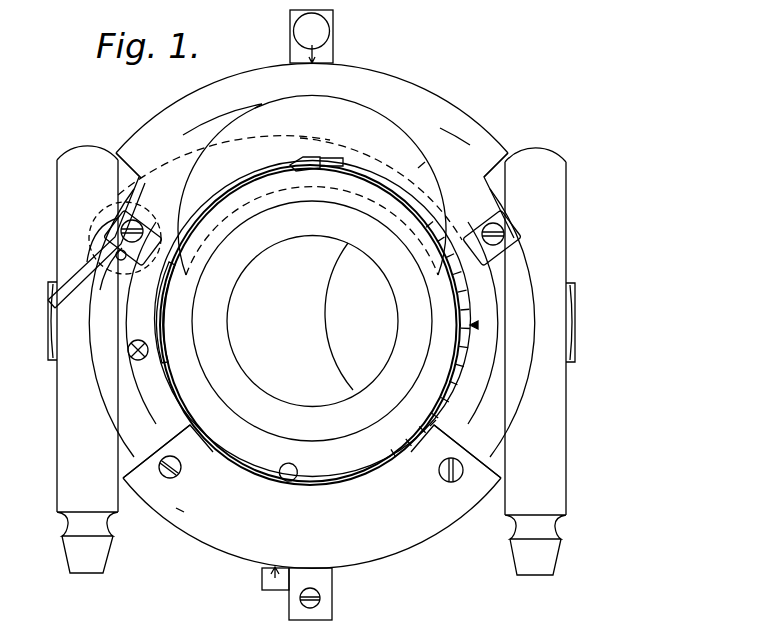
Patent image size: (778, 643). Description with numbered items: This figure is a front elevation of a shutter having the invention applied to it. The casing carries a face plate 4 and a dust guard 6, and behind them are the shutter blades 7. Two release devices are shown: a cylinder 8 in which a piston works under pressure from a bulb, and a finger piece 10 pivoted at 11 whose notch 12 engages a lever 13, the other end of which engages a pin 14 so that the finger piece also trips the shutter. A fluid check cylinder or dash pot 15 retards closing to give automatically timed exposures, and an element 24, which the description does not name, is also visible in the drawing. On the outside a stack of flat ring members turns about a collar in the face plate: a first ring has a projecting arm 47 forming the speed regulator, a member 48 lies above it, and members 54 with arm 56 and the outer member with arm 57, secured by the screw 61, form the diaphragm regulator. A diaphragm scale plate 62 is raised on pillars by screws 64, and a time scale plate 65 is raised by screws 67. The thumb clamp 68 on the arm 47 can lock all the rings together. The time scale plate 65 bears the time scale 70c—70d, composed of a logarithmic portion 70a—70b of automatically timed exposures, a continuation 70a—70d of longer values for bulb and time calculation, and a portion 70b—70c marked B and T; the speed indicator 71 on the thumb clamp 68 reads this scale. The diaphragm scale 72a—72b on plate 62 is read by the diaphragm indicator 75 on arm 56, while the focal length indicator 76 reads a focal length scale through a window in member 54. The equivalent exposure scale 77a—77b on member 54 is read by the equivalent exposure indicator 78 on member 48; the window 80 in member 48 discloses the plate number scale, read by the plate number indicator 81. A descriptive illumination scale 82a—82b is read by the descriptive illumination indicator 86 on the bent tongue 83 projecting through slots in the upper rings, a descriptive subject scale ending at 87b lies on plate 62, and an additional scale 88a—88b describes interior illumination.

The face plate 4 is at (312, 323).
The dust guard 6 is at (312, 321).
The shutter blades 7 is at (312, 321).
The cylinder 8 is at (67, 412).
The finger piece 10 is at (60, 300).
The pivot 11 is at (118, 259).
The notch 12 is at (115, 228).
The lever 13 is at (173, 174).
The pin 14 is at (427, 220).
The fluid check cylinder or dash pot 15 is at (557, 413).
The inner dial 24 is at (322, 408).
The projecting arm 47 is at (333, 53).
The member 48 is at (434, 422).
The member 54 is at (312, 323).
The projecting arm 56 is at (258, 581).
The projecting arm 57 is at (328, 588).
The screw 61 is at (312, 609).
The diaphragm scale plate 62 is at (312, 496).
The screws 64 is at (182, 469).
The time scale plate 65 is at (315, 150).
The screws 67 is at (145, 231).
The thumb clamp 68 is at (322, 28).
The time scale point 70a is at (285, 68).
The time scale point 70b is at (452, 118).
The time scale end 70c is at (504, 152).
The time scale end 70d is at (147, 136).
The speed indicator 71 is at (307, 50).
The diaphragm scale end 72a is at (197, 522).
The diaphragm scale end 72b is at (440, 518).
The diaphragm indicator 75 is at (271, 586).
The focal length indicator 76 is at (292, 476).
The equivalent exposure scale end 77a is at (425, 430).
The equivalent exposure scale end 77b is at (427, 245).
The equivalent exposure indicator 78 is at (478, 330).
The aperture or window 80 is at (158, 353).
The plate number indicator 81 is at (130, 353).
The descriptive illumination scale end 82a is at (302, 128).
The descriptive illumination scale end 82b is at (421, 166).
The tongue 83 is at (300, 168).
The descriptive illumination indicator 86 is at (290, 163).
The descriptive subject scale end 87b is at (306, 526).
The interior illumination scale end 88a is at (198, 160).
The interior illumination scale end 88b is at (261, 150).